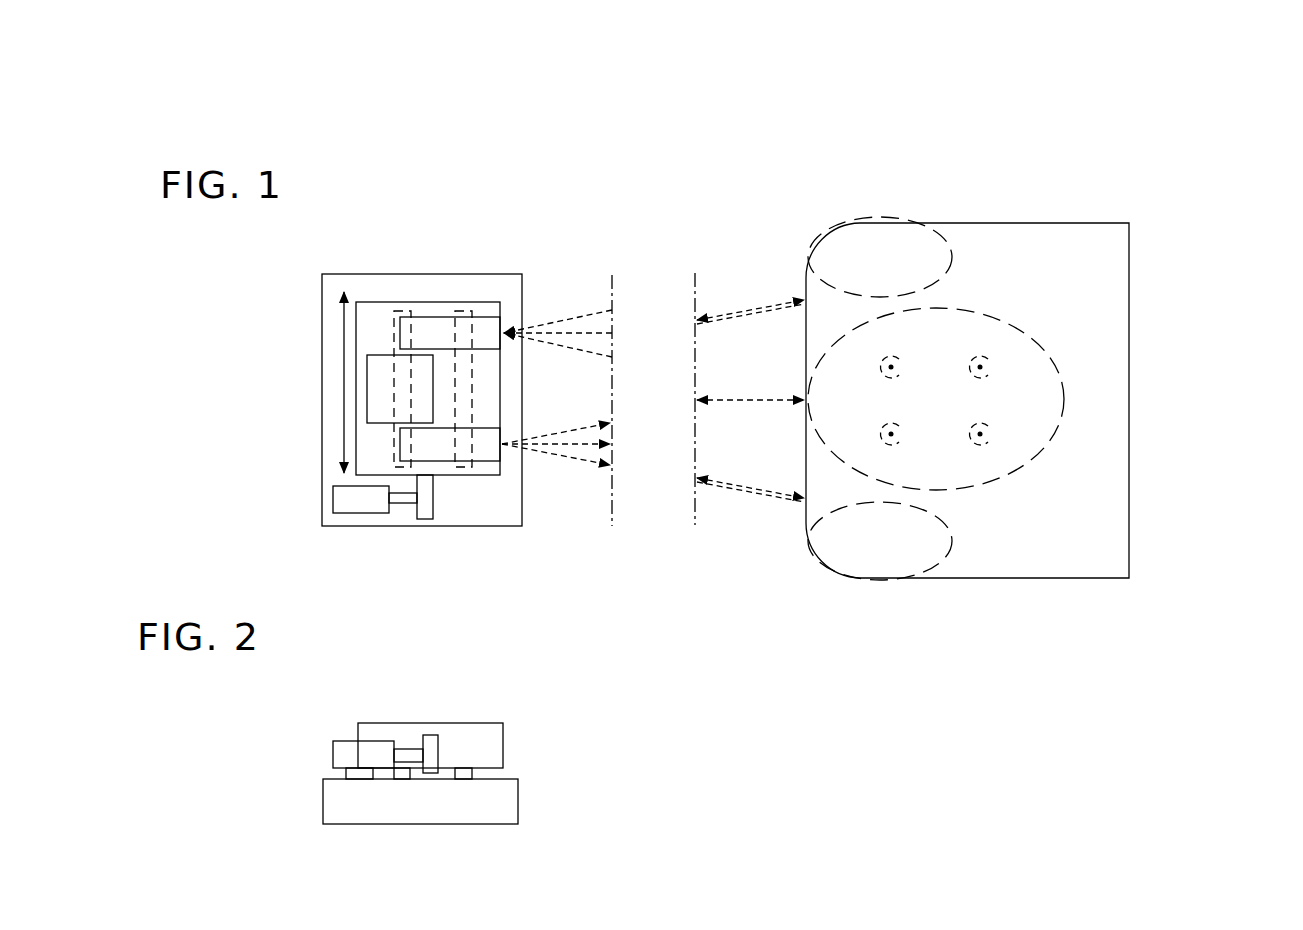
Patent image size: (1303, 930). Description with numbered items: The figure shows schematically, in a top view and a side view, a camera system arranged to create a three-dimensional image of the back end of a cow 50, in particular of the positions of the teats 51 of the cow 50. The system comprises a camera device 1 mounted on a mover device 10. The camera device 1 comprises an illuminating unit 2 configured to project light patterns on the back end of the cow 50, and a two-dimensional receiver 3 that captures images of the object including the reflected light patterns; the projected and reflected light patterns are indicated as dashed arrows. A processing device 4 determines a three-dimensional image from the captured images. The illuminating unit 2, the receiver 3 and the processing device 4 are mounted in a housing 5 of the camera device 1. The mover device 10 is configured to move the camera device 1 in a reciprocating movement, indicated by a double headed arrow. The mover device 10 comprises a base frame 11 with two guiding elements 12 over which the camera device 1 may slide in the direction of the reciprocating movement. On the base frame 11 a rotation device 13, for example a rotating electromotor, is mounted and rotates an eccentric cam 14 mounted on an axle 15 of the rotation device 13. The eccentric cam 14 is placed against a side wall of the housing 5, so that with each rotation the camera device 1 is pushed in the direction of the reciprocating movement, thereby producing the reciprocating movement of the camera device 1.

In FIG. 1, the camera device 1 is at (384, 298).
In FIG. 2, the camera device 1 is at (414, 717).
In FIG. 1, the illuminating unit 2 is at (487, 444).
In FIG. 1, the 2D receiver 3 is at (483, 333).
In FIG. 1, the processing device 4 is at (377, 393).
In FIG. 2, the housing 5 is at (483, 751).
In FIG. 1, the mover device 10 is at (363, 529).
In FIG. 2, the mover device 10 is at (364, 768).
In FIG. 2, the base frame 11 is at (483, 812).
In FIG. 1, the guiding elements 12 is at (401, 362).
In FIG. 2, the guiding elements 12 is at (464, 774).
In FIG. 1, the rotation device 13 is at (347, 502).
In FIG. 2, the rotation device 13 is at (357, 757).
In FIG. 1, the eccentric cam 14 is at (425, 486).
In FIG. 2, the eccentric cam 14 is at (433, 746).
In FIG. 1, the axle 15 is at (400, 500).
In FIG. 2, the axle 15 is at (410, 753).
In FIG. 1, the cow 50 is at (963, 209).
In FIG. 1, the teats 51 is at (891, 367).